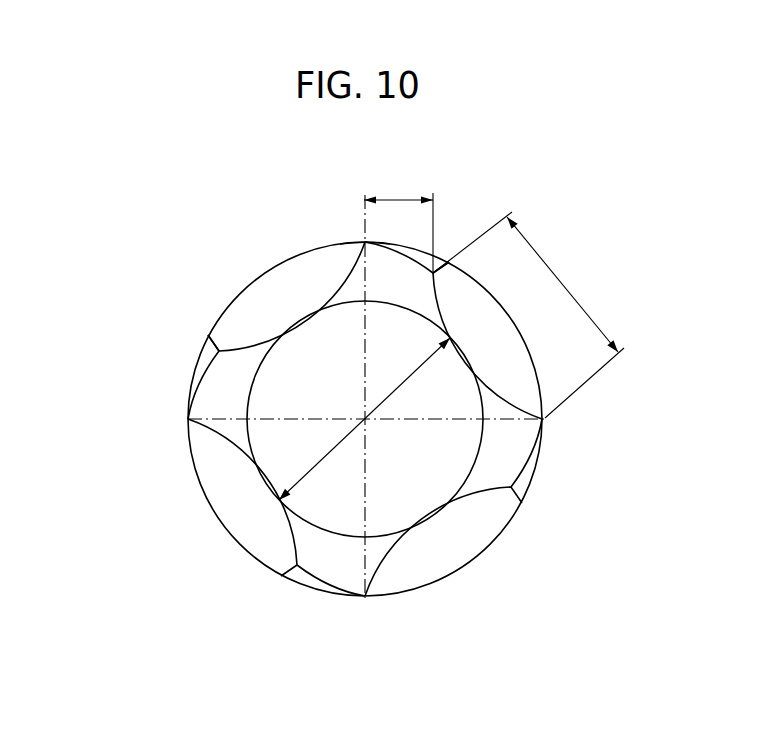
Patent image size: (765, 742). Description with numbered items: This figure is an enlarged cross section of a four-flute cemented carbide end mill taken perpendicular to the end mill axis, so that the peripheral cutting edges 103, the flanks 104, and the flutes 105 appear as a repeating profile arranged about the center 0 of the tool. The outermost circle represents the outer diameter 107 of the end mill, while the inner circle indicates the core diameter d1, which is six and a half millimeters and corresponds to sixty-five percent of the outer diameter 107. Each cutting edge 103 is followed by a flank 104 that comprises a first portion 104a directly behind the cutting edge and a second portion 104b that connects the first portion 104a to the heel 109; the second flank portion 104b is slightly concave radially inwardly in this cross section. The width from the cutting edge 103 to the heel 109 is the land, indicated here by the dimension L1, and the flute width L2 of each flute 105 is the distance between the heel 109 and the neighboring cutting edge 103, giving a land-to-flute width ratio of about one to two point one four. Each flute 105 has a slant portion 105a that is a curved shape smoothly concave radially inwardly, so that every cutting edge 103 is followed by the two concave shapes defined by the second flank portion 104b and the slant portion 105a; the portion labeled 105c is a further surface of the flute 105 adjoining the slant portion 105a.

The peripheral cutting edge 103 is at (364, 242).
The flank 104 is at (158, 370).
The first flank portion 104a is at (190, 390).
The second flank portion 104b is at (219, 350).
The flute 105 is at (242, 518).
The slant portion 105a is at (250, 343).
The flute heel 105c is at (303, 340).
The outer diameter 107 is at (415, 590).
The heel 109 is at (210, 327).
The drill axis center 0 is at (367, 421).
The core diameter d1 is at (308, 472).
The margin width L1 is at (392, 221).
The flute width L2 is at (528, 315).